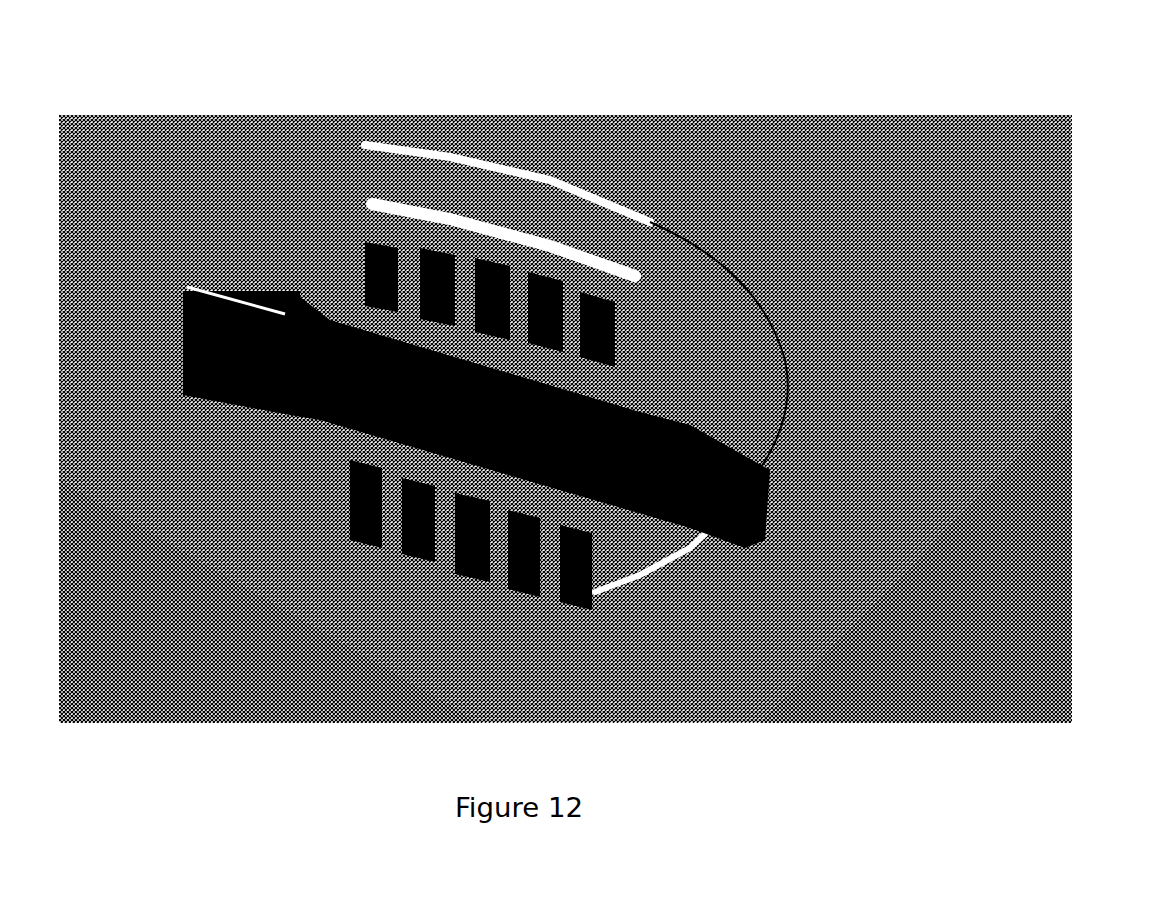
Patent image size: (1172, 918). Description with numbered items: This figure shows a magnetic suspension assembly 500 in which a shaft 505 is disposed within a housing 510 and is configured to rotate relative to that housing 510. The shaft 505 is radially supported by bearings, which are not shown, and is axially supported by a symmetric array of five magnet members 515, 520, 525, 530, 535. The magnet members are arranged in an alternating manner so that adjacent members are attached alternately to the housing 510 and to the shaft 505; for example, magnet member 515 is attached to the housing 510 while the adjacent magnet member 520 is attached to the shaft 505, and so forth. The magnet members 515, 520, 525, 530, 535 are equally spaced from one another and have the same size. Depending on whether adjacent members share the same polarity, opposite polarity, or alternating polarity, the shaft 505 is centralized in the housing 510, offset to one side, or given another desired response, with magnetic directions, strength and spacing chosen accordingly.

The magnetic suspension assembly 500 is at (1098, 70).
The shaft 505 is at (770, 492).
The housing 510 is at (732, 340).
The magnet member 515 is at (596, 326).
The magnet member 520 is at (540, 292).
The magnet member 525 is at (493, 266).
The magnet member 530 is at (441, 263).
The magnet member 535 is at (385, 265).